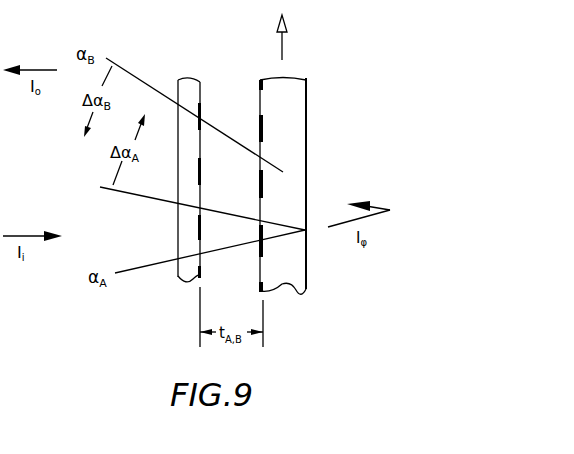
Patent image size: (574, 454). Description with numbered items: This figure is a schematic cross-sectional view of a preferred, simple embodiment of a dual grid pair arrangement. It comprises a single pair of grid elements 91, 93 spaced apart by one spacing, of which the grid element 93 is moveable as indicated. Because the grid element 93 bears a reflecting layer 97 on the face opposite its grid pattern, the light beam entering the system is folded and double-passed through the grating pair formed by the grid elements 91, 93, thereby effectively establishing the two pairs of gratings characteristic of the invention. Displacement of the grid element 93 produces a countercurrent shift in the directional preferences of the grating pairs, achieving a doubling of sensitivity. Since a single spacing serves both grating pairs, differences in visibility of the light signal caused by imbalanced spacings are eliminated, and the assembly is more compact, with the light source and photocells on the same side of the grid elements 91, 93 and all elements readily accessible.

The grid element 91 is at (187, 280).
The grid element 93 is at (308, 204).
The reflecting layer 97 is at (307, 98).